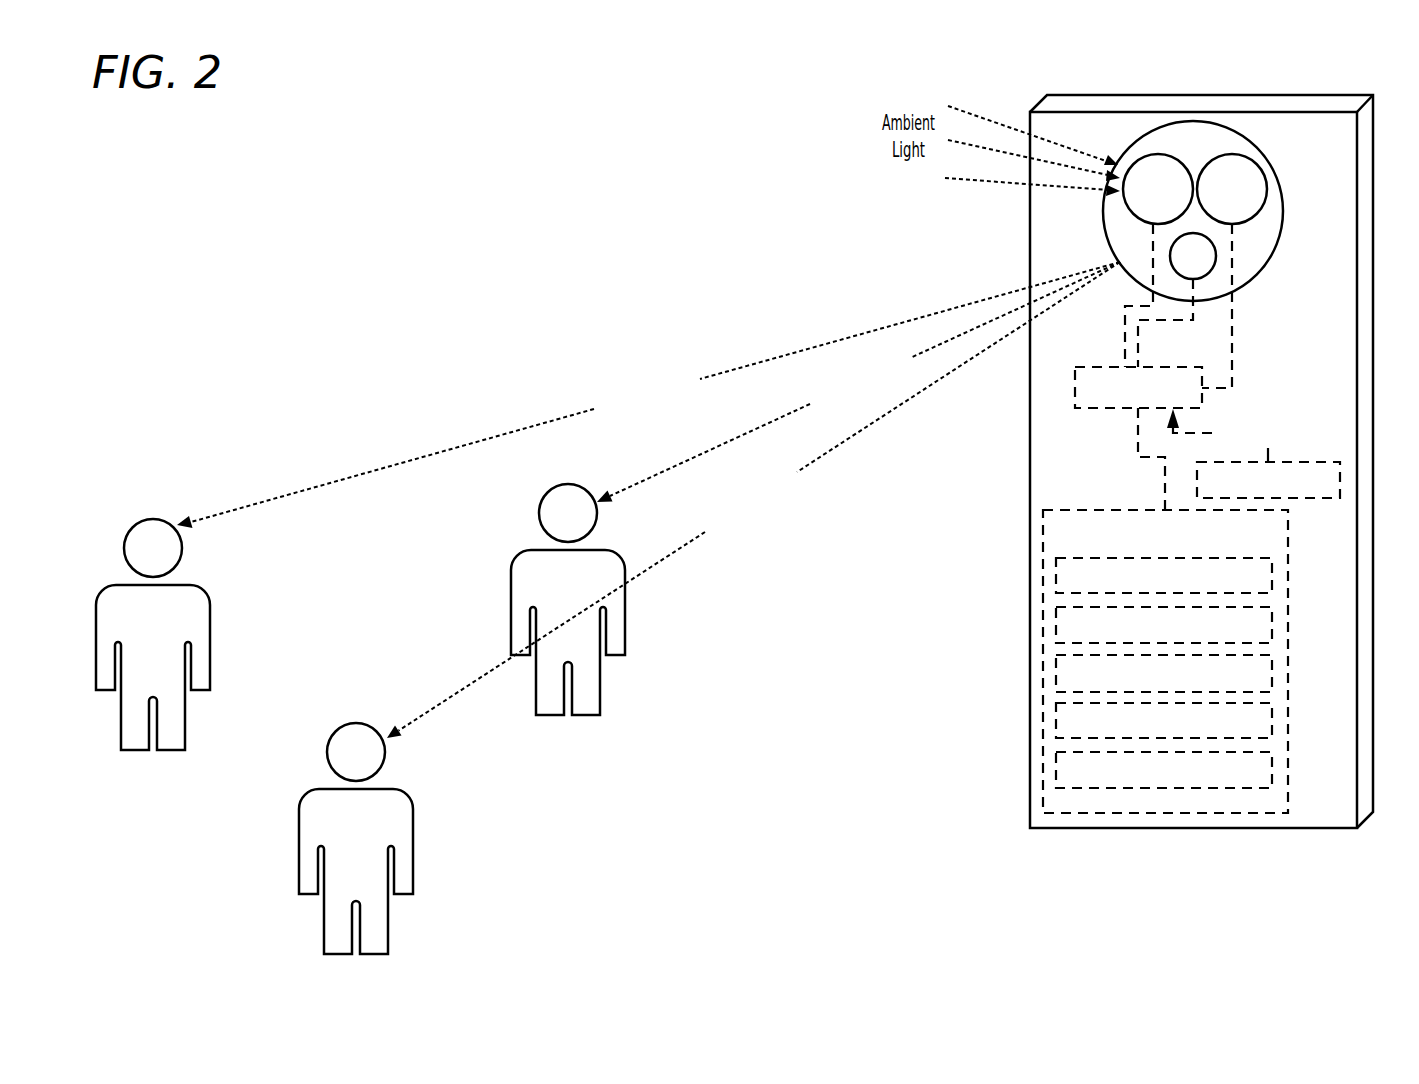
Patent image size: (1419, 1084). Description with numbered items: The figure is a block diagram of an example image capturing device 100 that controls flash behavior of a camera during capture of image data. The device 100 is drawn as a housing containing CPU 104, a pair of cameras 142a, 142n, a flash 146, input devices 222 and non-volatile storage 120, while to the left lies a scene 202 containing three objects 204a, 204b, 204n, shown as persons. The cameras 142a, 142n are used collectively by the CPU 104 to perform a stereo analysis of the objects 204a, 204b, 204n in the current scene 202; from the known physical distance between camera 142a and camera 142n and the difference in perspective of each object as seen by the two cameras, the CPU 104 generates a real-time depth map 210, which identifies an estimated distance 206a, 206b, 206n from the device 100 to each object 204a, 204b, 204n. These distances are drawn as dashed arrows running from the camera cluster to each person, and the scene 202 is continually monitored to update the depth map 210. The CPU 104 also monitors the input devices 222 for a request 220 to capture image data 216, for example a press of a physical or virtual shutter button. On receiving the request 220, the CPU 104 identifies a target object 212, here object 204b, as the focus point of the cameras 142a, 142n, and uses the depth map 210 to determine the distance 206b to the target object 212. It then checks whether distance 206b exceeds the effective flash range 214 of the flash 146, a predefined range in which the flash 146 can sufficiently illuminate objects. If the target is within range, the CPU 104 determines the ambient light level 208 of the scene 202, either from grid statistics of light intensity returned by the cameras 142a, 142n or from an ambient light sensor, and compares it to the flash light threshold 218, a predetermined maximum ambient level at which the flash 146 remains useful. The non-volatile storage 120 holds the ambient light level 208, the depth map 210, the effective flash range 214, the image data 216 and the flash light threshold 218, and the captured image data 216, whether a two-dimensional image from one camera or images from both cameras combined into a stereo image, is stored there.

The image capturing device 100 is at (1230, 95).
The camera 142a is at (1175, 200).
The camera 142n is at (1248, 200).
The flash 146 is at (1205, 266).
The CPU 104 is at (1168, 398).
The request 220 is at (1300, 443).
The input devices 222 is at (1330, 491).
The non-volatile storage 120 is at (1250, 538).
The ambient light level 208 is at (1248, 585).
The depth map 210 is at (1217, 634).
The effective flash range 214 is at (1252, 683).
The image data 216 is at (1220, 731).
The flash light threshold 218 is at (1252, 780).
The scene 202 is at (278, 291).
The object 204a is at (170, 646).
The object 204b is at (585, 610).
The object 204n is at (372, 850).
The distance 206a is at (648, 395).
The distance 206b is at (858, 382).
The distance 206n is at (753, 500).
The target object 212 is at (623, 627).